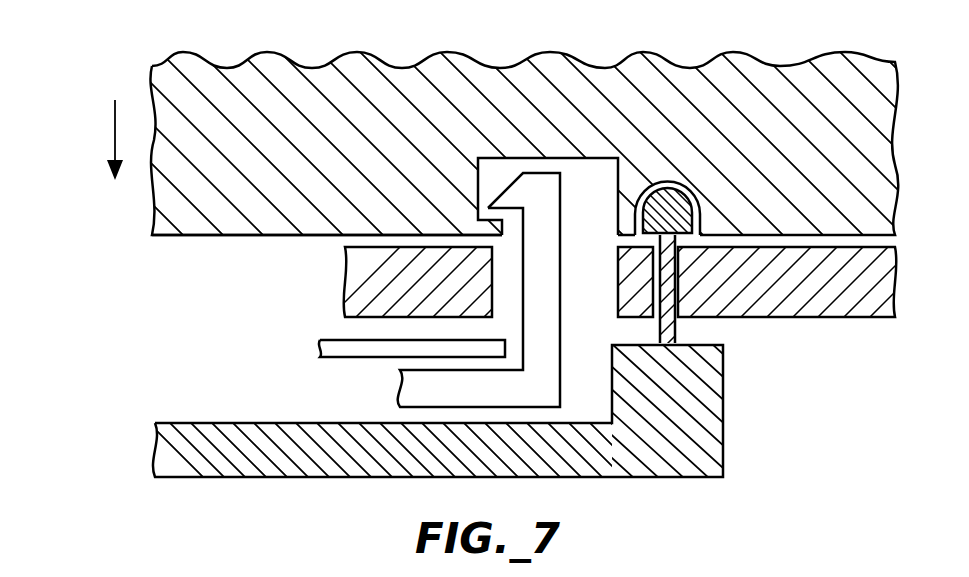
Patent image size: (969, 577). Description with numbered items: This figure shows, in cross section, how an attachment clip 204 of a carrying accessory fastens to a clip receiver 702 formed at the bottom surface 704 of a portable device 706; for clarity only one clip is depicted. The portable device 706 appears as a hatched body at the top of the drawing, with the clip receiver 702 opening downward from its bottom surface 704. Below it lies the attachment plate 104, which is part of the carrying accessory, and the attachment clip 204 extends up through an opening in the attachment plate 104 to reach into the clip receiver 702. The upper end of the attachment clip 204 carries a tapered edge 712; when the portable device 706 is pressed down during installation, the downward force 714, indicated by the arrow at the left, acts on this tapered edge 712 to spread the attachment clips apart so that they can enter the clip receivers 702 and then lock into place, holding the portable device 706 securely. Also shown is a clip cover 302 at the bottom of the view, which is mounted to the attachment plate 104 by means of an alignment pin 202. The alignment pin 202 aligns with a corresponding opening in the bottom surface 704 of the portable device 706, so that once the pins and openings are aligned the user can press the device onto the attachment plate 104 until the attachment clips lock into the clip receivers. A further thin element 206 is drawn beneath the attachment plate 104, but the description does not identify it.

The attachment plate 104 is at (343, 300).
The alignment pins 202 is at (666, 186).
The attachment clip 204 is at (398, 393).
The thin plate 206 is at (327, 358).
The clip cover 302 is at (630, 477).
The clip receiver 702 is at (547, 143).
The bottom surface 704 is at (227, 252).
The portable device 706 is at (315, 140).
The tapered edge 712 is at (519, 175).
The downward force 714 is at (113, 145).